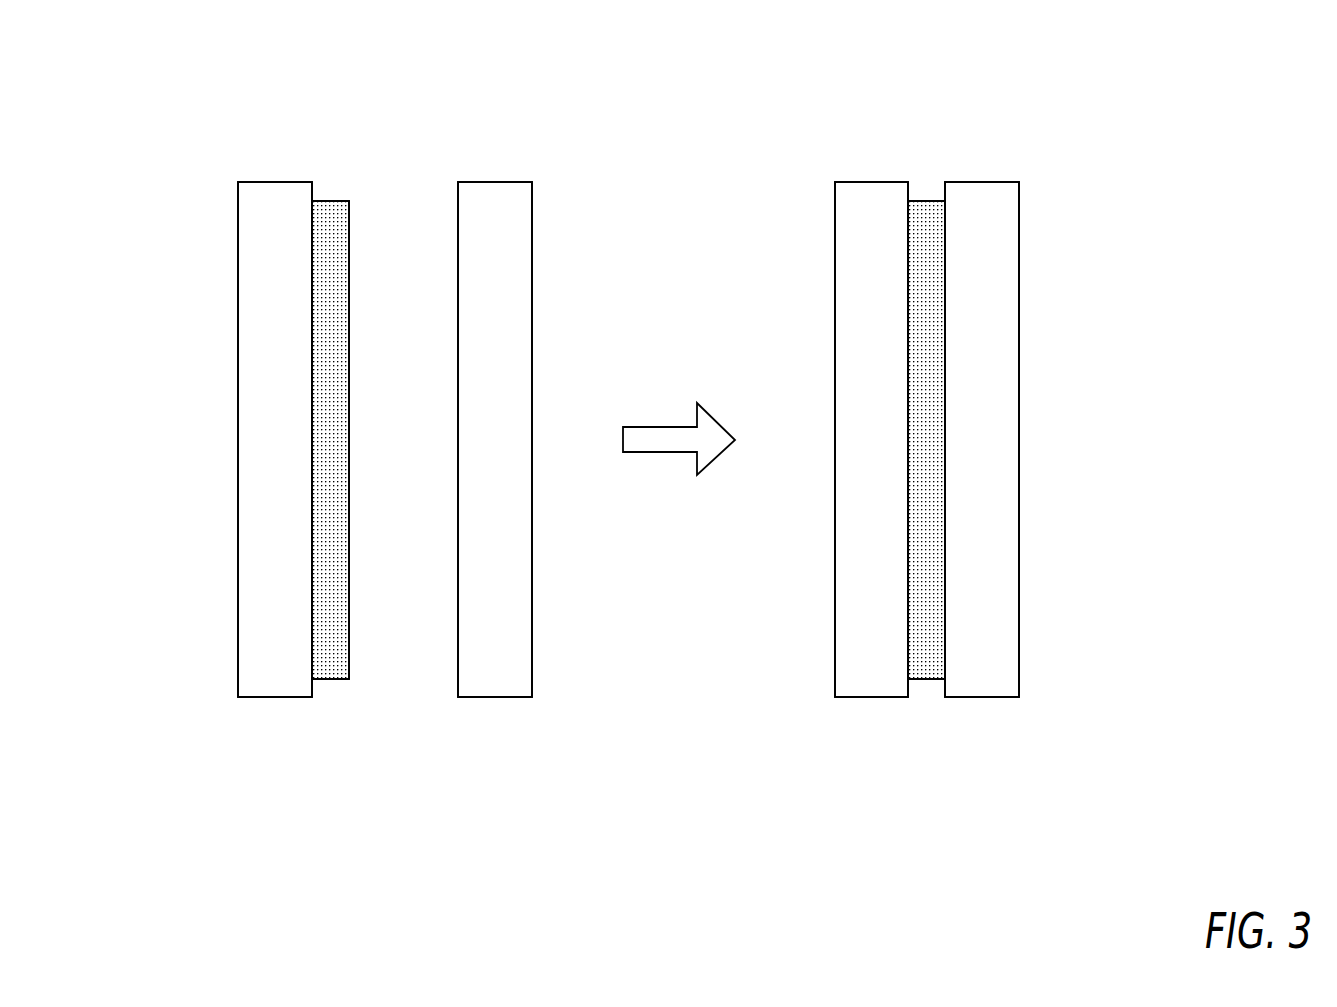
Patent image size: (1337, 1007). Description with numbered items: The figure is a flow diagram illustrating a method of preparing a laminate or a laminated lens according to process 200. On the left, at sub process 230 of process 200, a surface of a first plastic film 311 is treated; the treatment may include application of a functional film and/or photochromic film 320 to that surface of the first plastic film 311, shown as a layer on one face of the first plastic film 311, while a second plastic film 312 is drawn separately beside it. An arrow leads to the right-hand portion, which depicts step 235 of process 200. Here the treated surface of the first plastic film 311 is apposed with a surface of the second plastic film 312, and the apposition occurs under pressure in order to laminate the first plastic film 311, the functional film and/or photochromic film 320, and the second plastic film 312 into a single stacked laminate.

The process 200 is at (622, 64).
The sub process 230 is at (330, 108).
The lamination step 235 is at (1020, 108).
The first plastic film 311 is at (275, 182).
The second plastic film 312 is at (495, 182).
The functional film and/or photochromic film 320 is at (327, 679).